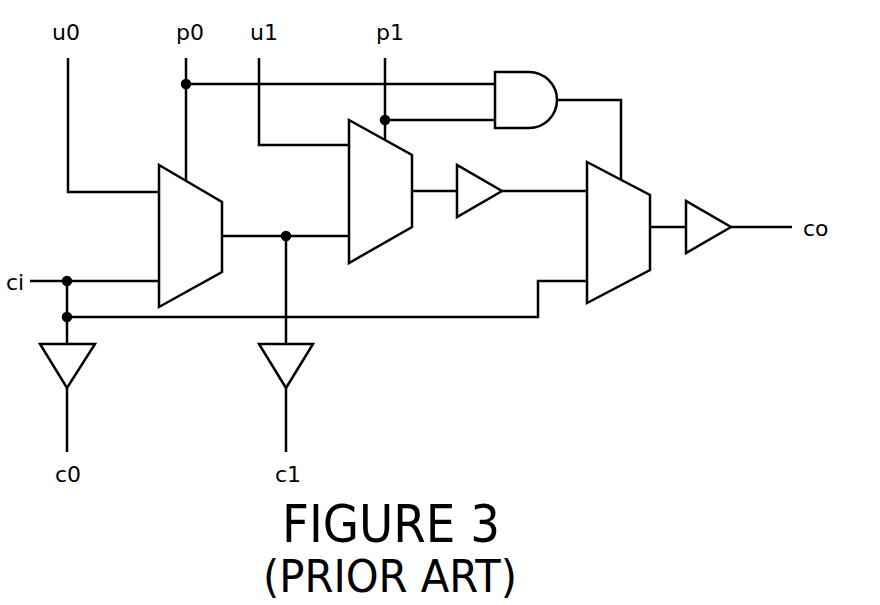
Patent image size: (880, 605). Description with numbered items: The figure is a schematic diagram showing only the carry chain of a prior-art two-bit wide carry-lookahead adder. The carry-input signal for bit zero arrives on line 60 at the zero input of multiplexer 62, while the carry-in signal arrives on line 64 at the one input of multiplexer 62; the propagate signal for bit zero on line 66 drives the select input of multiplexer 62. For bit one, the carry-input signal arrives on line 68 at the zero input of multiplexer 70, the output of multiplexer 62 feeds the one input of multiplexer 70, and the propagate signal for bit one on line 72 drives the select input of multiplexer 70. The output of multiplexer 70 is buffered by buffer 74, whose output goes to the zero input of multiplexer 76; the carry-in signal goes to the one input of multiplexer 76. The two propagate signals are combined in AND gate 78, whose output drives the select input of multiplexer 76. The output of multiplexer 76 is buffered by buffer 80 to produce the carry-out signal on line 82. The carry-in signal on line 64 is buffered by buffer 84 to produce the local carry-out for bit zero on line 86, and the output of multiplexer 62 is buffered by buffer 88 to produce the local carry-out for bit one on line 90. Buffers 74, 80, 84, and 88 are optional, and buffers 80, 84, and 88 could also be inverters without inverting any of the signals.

The line 60 is at (113, 121).
The multiplexer 62 is at (254, 244).
The line 64 is at (305, 290).
The line 66 is at (338, 115).
The line 68 is at (304, 97).
The multiplexer 70 is at (403, 201).
The line 72 is at (438, 89).
The buffer 74 is at (522, 175).
The multiplexer 76 is at (636, 222).
The AND gate 78 is at (558, 108).
The buffer 80 is at (708, 209).
The line 82 is at (761, 203).
The buffer 84 is at (77, 374).
The line 86 is at (43, 420).
The buffer 88 is at (293, 375).
The line 90 is at (262, 420).